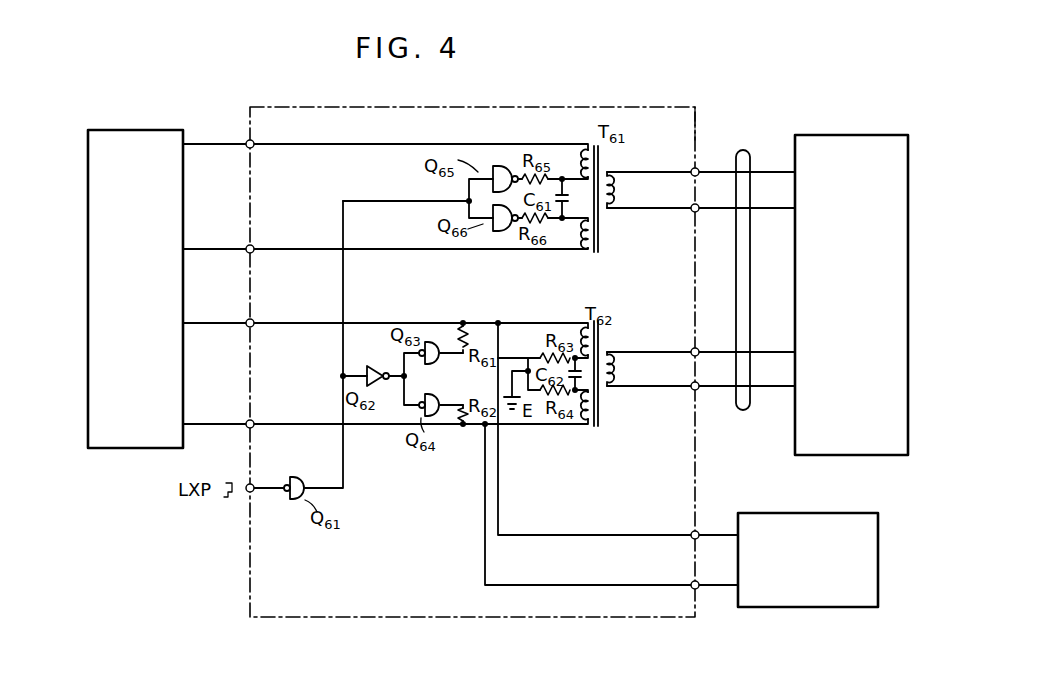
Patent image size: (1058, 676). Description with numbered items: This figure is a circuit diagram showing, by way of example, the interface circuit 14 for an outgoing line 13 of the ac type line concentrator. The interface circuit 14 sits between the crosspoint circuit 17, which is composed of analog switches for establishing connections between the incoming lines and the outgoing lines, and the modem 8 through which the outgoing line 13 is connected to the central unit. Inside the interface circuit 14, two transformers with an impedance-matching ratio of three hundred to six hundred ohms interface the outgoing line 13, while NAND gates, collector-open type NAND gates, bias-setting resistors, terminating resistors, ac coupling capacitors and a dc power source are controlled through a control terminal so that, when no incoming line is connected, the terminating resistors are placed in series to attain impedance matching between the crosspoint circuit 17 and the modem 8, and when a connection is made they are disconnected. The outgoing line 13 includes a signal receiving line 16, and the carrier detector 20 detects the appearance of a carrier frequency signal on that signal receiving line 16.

The crosspoint circuit 17 is at (157, 130).
The interface circuit 14 is at (729, 126).
The outgoing line 13 is at (746, 150).
The modem 8 is at (846, 135).
The signal receiving line 16 is at (772, 352).
The carrier detector 20 is at (812, 607).